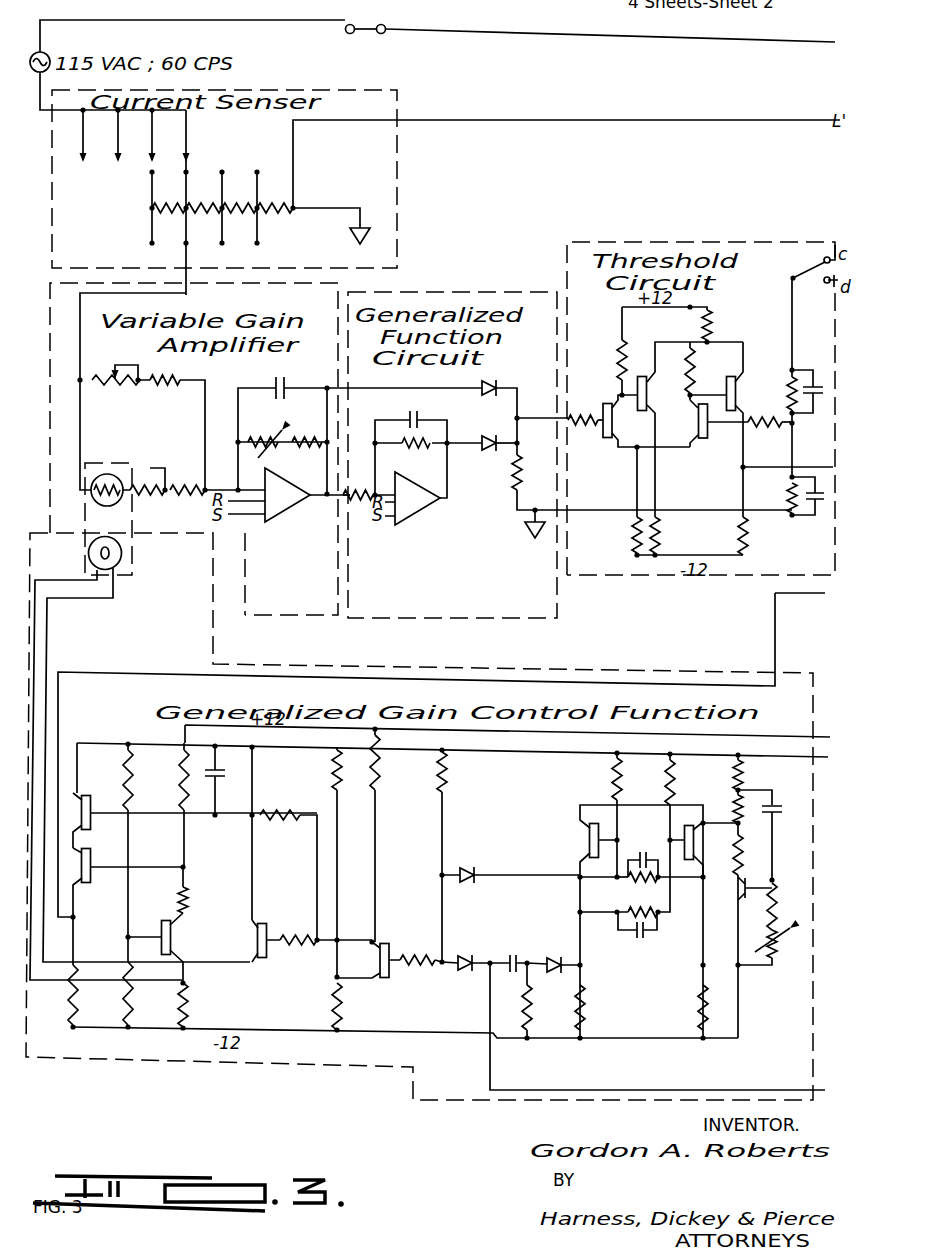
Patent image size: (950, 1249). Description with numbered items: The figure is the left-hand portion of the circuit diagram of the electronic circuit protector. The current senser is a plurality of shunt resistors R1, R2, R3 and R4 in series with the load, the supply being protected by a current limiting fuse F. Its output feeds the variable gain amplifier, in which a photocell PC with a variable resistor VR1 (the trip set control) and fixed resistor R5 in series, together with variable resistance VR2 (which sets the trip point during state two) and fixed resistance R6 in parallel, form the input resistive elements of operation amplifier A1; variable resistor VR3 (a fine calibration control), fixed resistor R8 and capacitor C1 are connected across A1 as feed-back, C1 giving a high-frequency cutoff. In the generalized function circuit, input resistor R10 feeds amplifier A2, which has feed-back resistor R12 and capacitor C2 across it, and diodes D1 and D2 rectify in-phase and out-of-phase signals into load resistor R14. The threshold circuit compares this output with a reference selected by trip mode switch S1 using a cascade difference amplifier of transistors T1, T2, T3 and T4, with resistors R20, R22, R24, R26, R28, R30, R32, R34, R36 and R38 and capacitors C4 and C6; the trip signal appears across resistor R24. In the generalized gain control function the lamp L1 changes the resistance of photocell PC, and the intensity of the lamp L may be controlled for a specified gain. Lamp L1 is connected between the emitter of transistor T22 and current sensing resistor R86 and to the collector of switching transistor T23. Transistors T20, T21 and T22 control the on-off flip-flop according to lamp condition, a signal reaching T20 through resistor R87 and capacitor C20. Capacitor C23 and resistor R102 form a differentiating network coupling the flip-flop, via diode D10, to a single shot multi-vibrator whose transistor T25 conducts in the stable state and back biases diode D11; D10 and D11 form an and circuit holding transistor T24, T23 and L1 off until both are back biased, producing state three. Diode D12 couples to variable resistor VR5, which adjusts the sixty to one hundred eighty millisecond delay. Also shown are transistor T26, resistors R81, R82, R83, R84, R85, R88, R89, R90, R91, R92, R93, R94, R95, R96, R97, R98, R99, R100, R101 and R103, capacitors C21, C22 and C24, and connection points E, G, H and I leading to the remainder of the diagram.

The shunt resistor R1 is at (169, 194).
The shunt resistor R2 is at (204, 194).
The shunt resistor R3 is at (239, 194).
The shunt resistor R4 is at (275, 194).
The variable resistance VR2 is at (105, 374).
The fixed resistance R6 is at (178, 377).
The capacitor C1 is at (284, 380).
The variable resistor VR3 is at (268, 428).
The fixed resistor R8 is at (306, 425).
The photocell PC is at (108, 473).
The variable resistor VR1 is at (150, 486).
The fixed resistor R5 is at (184, 488).
The operation amplifier A1 is at (280, 518).
The lamp L1 is at (123, 552).
The diode D1 is at (478, 385).
The capacitor C2 is at (415, 412).
The feed-back resistor R12 is at (402, 447).
The diode D2 is at (494, 452).
The amplifier A2 is at (417, 513).
The input resistor R10 is at (370, 510).
The load resistor R14 is at (522, 470).
The reference selector switch S1 is at (808, 266).
The resistor R28 is at (617, 362).
The resistor R20 is at (588, 408).
The transistor T1 is at (606, 441).
The transistor T3 is at (643, 376).
The resistor R30 is at (709, 330).
The resistor R32 is at (693, 368).
The resistor R34 is at (790, 385).
The transistor T4 is at (737, 393).
The capacitor C6 is at (812, 384).
The transistor T2 is at (704, 443).
The resistor R36 is at (770, 441).
The resistor R38 is at (789, 497).
The capacitor C4 is at (820, 500).
The resistor R24 is at (752, 543).
The resistor R26 is at (655, 550).
The resistor R22 is at (635, 533).
The resistor R81 is at (155, 761).
The resistor R82 is at (175, 790).
The capacitor C20 is at (227, 772).
The resistor R87 is at (263, 806).
The transistor T20 is at (108, 781).
The transistor T21 is at (128, 905).
The resistor R83 is at (225, 862).
The transistor T22 is at (175, 935).
The switching transistor T23 is at (272, 927).
The current sensing resistor R86 is at (187, 1012).
The resistor R88 is at (305, 950).
The resistor R89 is at (335, 1000).
The resistor R84 is at (72, 1003).
The resistor R85 is at (130, 1005).
The resistor R90 is at (340, 790).
The resistor R91 is at (372, 768).
The resistor R92 is at (450, 783).
The resistor R93 is at (615, 775).
The diode D11 is at (473, 867).
The transistor T24 is at (397, 943).
The diode D10 is at (467, 953).
The capacitor C23 is at (520, 953).
The diode D12 is at (562, 956).
The resistor R103 is at (420, 970).
The resistor R102 is at (540, 1010).
The transistor T25 is at (588, 836).
The capacitor C21 is at (642, 855).
The transistor T26 is at (704, 849).
The resistor R94 is at (674, 790).
The resistor R96 is at (736, 810).
The resistor R95 is at (742, 787).
The capacitor C24 is at (780, 812).
The resistor R97 is at (742, 860).
The resistor R98 is at (774, 884).
The variable resistor VR5 is at (780, 947).
The resistor R101 is at (584, 1002).
The resistor R100 is at (703, 1003).
The capacitor C22 is at (640, 931).
The resistor R99 is at (637, 877).
The lamp L is at (610, 31).
The terminal E is at (795, 476).
The current limiting fuse F is at (368, 33).
The terminal G is at (514, 731).
The terminal H is at (460, 759).
The terminal I is at (662, 1031).